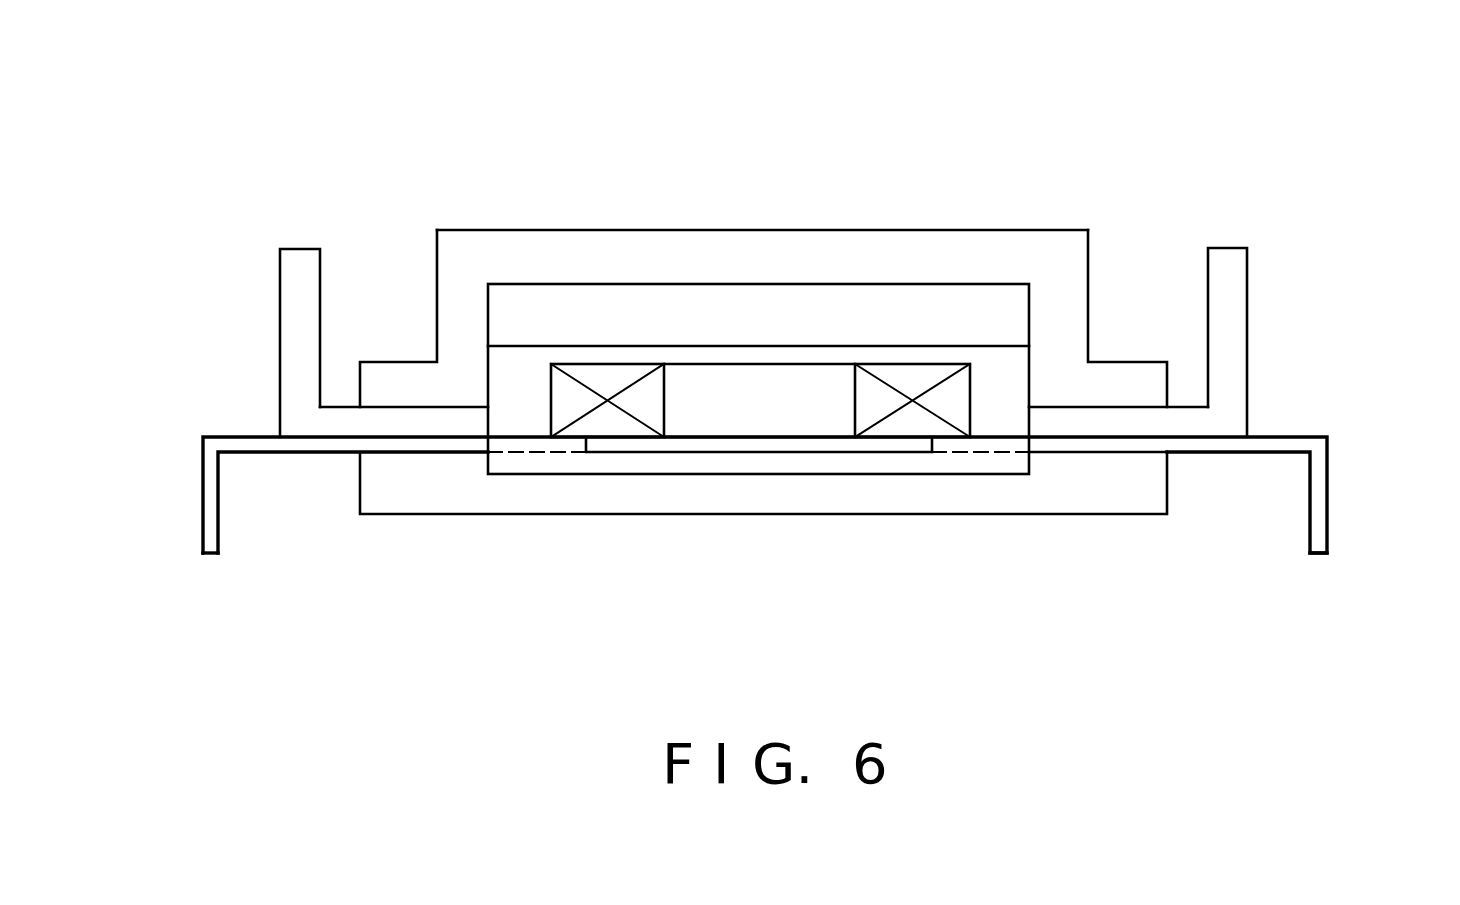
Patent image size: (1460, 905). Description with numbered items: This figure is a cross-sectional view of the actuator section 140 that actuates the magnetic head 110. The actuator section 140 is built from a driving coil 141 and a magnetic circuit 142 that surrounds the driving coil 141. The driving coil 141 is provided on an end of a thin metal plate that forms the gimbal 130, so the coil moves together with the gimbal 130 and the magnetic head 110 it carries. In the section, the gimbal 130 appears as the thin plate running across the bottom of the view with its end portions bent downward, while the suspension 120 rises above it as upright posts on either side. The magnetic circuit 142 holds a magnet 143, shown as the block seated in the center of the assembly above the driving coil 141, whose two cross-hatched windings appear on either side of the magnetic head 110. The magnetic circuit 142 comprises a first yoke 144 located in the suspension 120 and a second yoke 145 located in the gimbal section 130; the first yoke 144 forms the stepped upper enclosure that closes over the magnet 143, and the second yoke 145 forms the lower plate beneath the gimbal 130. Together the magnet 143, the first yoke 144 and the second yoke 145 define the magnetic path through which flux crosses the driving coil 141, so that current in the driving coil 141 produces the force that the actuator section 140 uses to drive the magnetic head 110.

The magnetic head 110 is at (733, 445).
The suspension 120 is at (299, 262).
The gimbal 130 is at (208, 506).
The actuator section 140 is at (742, 38).
The driving coil 141 is at (903, 440).
The magnetic circuit 142 is at (905, 217).
The magnet 143 is at (527, 302).
The first yoke 144 is at (749, 247).
The second yoke 145 is at (447, 490).